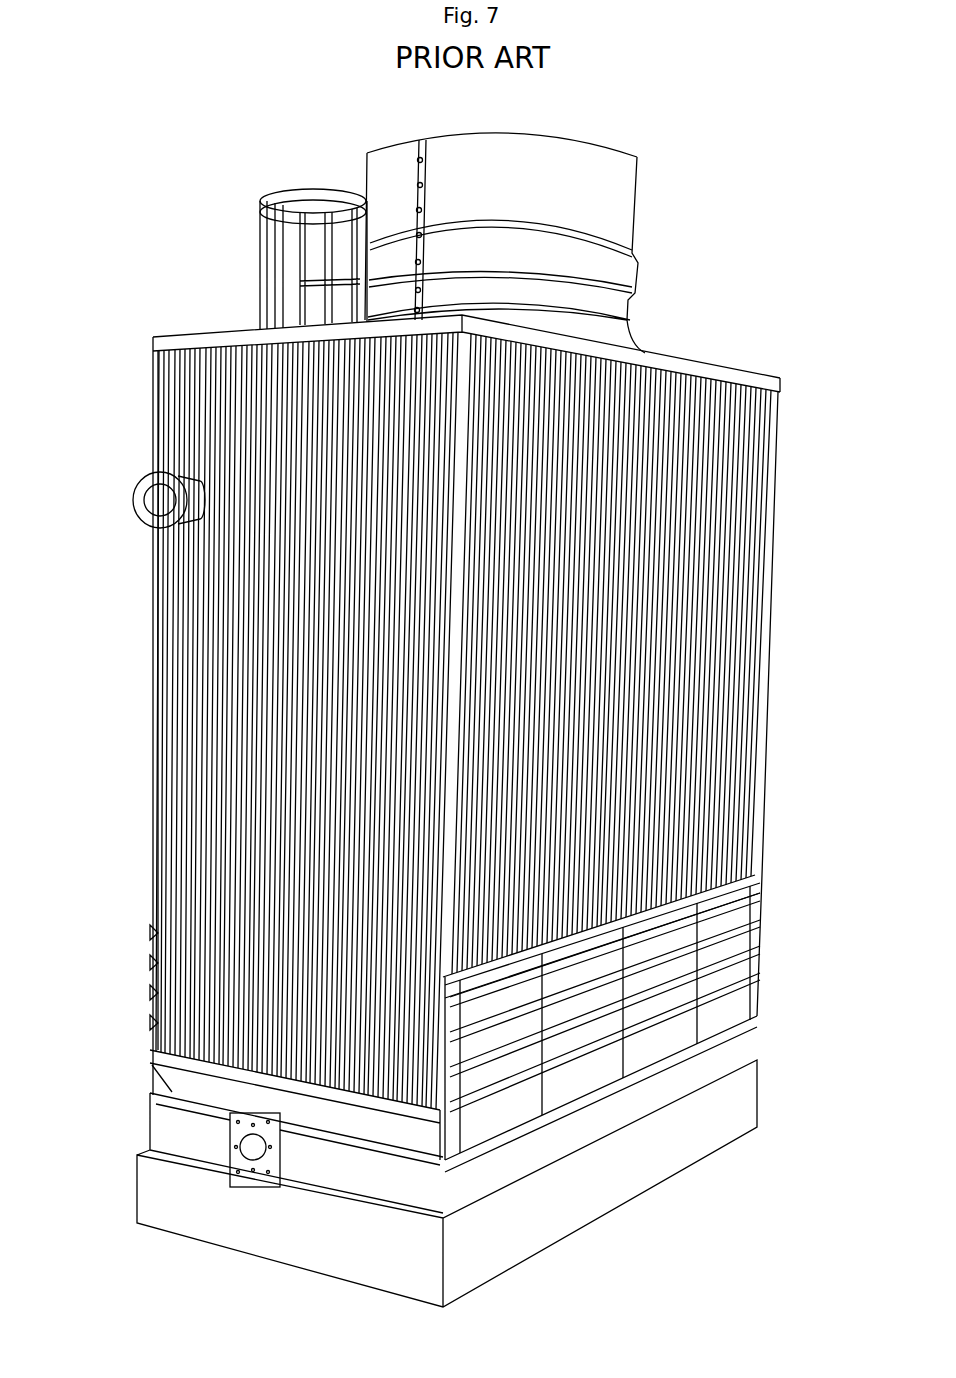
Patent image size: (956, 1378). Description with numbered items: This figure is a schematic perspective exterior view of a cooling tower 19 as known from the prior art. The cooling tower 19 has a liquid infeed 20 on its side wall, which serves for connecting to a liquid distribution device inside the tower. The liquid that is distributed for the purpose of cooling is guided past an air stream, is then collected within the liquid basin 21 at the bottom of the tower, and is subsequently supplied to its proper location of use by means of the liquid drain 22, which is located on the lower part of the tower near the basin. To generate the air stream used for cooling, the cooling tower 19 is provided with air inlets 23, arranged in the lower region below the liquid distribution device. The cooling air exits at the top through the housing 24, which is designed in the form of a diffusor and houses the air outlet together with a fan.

The cooling tower 19 is at (182, 203).
The liquid infeed 20 is at (155, 505).
The liquid basin 21 is at (583, 1127).
The liquid drain 22 is at (247, 1148).
The air inlets 23 is at (695, 990).
The housing 24 is at (625, 203).